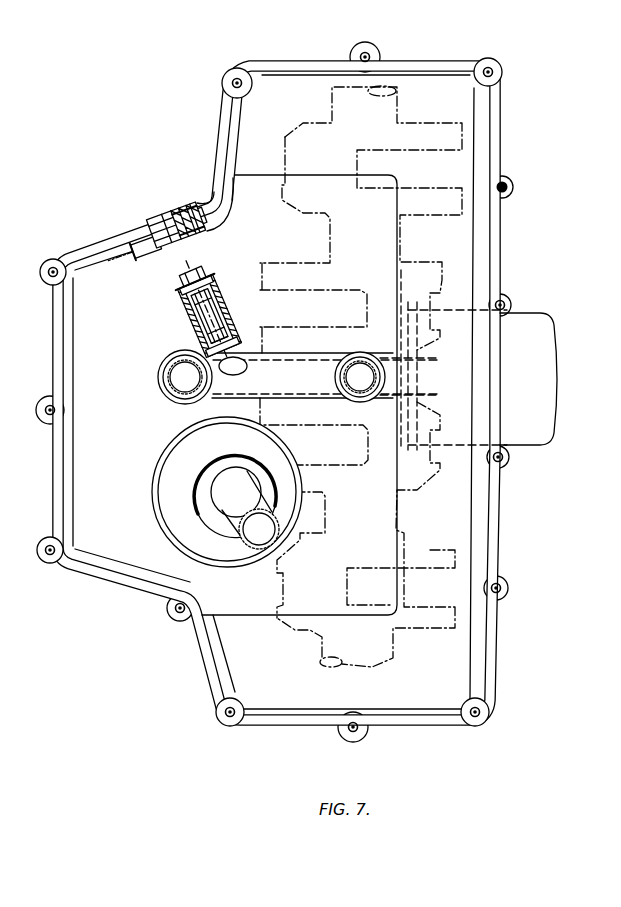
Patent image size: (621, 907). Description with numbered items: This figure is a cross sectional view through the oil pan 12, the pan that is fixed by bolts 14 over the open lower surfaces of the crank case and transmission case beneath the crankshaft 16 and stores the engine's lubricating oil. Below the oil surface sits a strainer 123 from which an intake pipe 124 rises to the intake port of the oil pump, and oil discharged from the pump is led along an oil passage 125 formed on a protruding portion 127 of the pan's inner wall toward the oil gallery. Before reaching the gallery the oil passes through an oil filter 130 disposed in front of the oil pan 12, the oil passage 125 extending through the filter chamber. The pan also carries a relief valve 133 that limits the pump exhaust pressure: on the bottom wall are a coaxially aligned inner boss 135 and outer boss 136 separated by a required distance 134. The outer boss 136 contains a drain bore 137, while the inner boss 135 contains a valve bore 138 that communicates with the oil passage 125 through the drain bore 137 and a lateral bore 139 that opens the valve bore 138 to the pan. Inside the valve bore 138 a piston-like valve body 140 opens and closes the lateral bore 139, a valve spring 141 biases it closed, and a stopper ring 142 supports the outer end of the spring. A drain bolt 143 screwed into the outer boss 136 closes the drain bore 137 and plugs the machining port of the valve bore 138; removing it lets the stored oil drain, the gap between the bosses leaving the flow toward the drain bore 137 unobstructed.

The oil pan 12 is at (293, 70).
The bolts 14 is at (365, 52).
The crankshaft 16 is at (313, 123).
The strainer 123 is at (171, 492).
The intake pipe 124 is at (242, 533).
The oil passage 125 is at (246, 371).
The protruding portion 127 is at (309, 366).
The oil filter 130 is at (556, 357).
The relief valve 133 is at (173, 306).
The distance 134 is at (153, 262).
The inner boss 135 is at (220, 285).
The outer boss 136 is at (210, 243).
The drain bore 137 is at (206, 253).
The valve bore 138 is at (192, 314).
The lateral bore 139 is at (231, 326).
The valve body 140 is at (232, 371).
The valve spring 141 is at (223, 302).
The stopper ring 142 is at (211, 273).
The drain bolt 143 is at (172, 208).